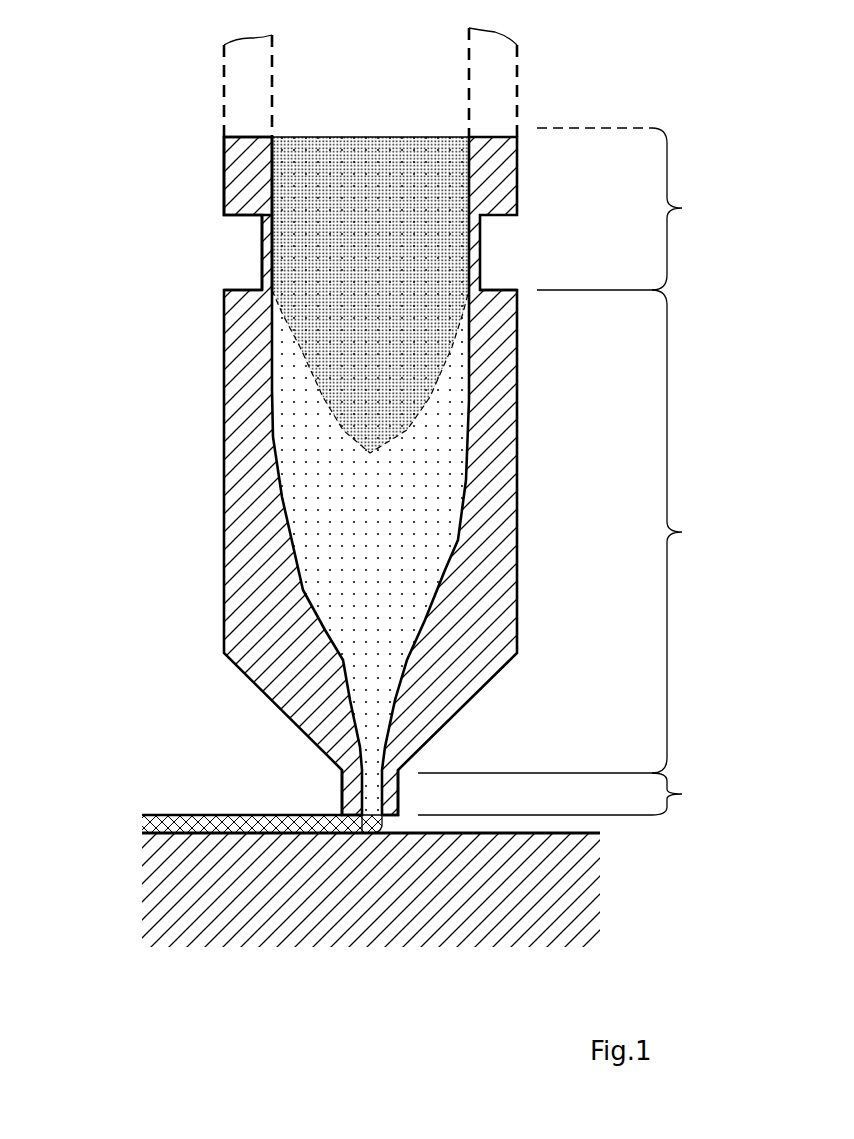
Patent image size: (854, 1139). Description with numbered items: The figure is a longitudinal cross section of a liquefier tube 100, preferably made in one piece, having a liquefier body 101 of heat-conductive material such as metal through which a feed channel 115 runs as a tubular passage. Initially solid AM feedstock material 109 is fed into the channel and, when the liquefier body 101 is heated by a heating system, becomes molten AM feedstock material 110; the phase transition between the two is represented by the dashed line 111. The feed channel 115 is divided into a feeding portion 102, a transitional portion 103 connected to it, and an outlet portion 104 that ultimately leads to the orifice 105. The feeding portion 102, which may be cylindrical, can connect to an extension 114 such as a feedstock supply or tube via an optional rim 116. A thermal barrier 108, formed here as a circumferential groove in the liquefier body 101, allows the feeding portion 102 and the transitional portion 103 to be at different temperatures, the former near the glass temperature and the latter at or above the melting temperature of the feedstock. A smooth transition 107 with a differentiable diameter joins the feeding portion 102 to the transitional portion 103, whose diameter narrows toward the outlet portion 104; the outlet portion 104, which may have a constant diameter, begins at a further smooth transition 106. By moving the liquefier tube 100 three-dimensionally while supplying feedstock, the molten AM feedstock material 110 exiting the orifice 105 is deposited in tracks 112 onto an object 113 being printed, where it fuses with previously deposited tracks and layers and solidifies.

The liquefier tube 100 is at (152, 170).
The liquefier body 101 is at (247, 477).
The feeding portion 102 is at (640, 209).
The transitional portion 103 is at (581, 531).
The outlet portion 104 is at (581, 794).
The orifice 105 is at (360, 835).
The transition 106 is at (337, 760).
The smooth transition 107 is at (258, 300).
The thermal barrier 108 is at (270, 253).
The solid AM feedstock material 109 is at (306, 272).
The molten AM feedstock material 110 is at (313, 550).
The dashed line 111 is at (300, 368).
The tracks 112 is at (228, 848).
The object 113 is at (484, 907).
The extension 114 is at (252, 102).
The feed channel 115 is at (349, 118).
The rim 116 is at (247, 173).